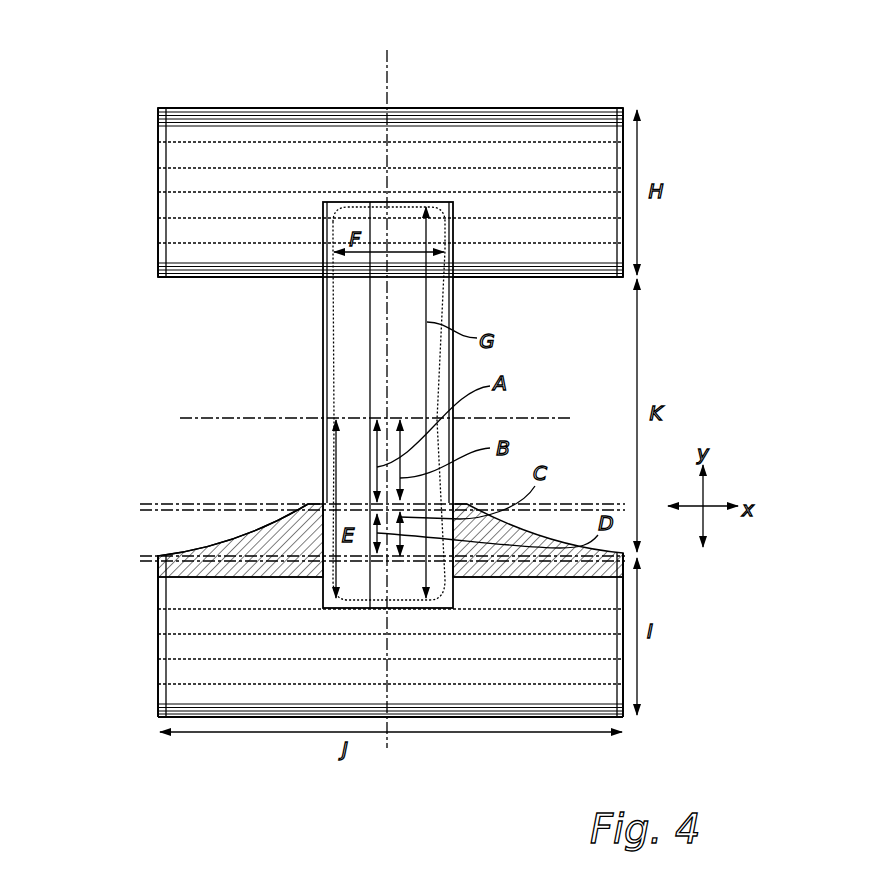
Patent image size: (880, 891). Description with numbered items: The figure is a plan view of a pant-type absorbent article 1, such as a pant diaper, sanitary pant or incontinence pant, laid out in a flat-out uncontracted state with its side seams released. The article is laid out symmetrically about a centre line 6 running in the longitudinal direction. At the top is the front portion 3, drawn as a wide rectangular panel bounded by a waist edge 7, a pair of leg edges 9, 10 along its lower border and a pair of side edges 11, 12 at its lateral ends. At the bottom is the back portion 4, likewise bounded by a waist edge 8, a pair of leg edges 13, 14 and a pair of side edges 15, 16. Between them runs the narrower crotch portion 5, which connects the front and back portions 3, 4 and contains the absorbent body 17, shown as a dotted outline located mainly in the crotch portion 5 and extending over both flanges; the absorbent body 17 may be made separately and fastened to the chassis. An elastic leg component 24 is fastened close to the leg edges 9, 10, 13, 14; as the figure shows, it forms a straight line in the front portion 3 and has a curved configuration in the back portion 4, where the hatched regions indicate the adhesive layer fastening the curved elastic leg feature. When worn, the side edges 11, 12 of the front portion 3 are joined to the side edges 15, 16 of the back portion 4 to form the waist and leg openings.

The pant-type absorbent article 1 is at (515, 56).
The front portion 3 is at (420, 108).
The back portion 4 is at (158, 672).
The crotch portion 5 is at (325, 377).
The centre line 6 is at (385, 386).
The waist edge 7 is at (530, 108).
The waist edge 8 is at (495, 717).
The leg edge 9 is at (240, 278).
The leg edge 10 is at (548, 278).
The side edge 11 is at (158, 183).
The side edge 12 is at (623, 203).
The leg edge 13 is at (213, 545).
The leg edge 14 is at (542, 532).
The side edge 15 is at (158, 620).
The side edge 16 is at (623, 658).
The absorbent body 17 is at (427, 345).
The elastic leg component 24 is at (255, 530).